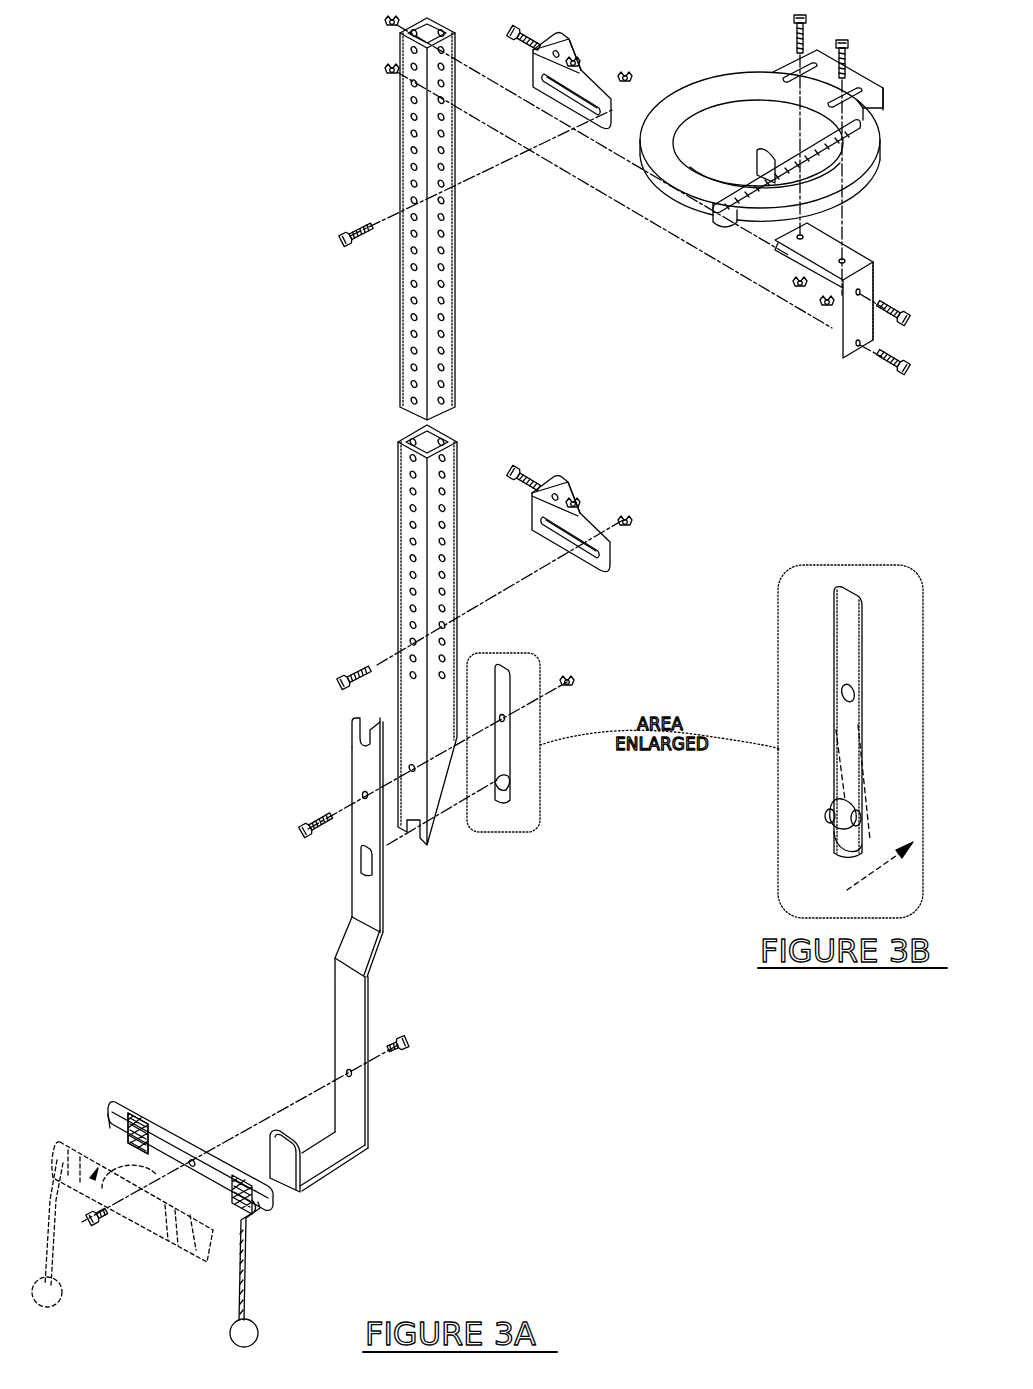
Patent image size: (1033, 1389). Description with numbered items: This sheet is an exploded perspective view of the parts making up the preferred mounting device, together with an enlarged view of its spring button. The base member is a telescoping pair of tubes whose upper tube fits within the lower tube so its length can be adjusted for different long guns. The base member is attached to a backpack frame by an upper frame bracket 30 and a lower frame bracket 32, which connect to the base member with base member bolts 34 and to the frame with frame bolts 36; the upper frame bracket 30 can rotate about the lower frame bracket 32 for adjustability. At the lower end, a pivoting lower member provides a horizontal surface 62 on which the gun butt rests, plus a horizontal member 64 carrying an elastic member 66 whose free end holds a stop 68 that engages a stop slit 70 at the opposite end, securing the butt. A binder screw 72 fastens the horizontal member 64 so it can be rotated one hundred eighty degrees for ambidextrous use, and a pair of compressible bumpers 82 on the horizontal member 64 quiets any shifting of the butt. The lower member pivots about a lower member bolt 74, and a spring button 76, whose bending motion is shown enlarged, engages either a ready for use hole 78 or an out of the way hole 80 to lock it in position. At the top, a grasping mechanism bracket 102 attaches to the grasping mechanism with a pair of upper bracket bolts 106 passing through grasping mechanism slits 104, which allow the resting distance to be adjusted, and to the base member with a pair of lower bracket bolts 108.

In FIG. 3A, the upper frame bracket 30 is at (592, 82).
In FIG. 3A, the lower frame bracket 32 is at (592, 525).
In FIG. 3A, the base member bolt 34 is at (352, 233).
In FIG. 3A, the frame bolt 36 is at (520, 28).
In FIG. 3A, the horizontal surface 62 is at (318, 1164).
In FIG. 3A, the horizontal member 64 is at (190, 1154).
In FIG. 3A, the elastic member 66 is at (250, 1265).
In FIG. 3A, the stop 68 is at (256, 1324).
In FIG. 3A, the stop slit 70 is at (112, 1134).
In FIG. 3A, the binder screw 72 is at (95, 1230).
In FIG. 3A, the lower member bolt 74 is at (315, 822).
In FIG. 3A, the spring button 76 is at (512, 774).
In FIG. 3B, the spring button 76 is at (865, 664).
In FIG. 3A, the ready for use hole 78 is at (360, 864).
In FIG. 3A, the out of the way hole 80 is at (353, 735).
In FIG. 3A, the bumper 82 is at (142, 1115).
In FIG. 3A, the grasping mechanism bracket 102 is at (860, 252).
In FIG. 3A, the grasping mechanism slit 104 is at (840, 100).
In FIG. 3A, the upper bracket bolt 106 is at (842, 40).
In FIG. 3A, the lower bracket bolt 108 is at (888, 358).